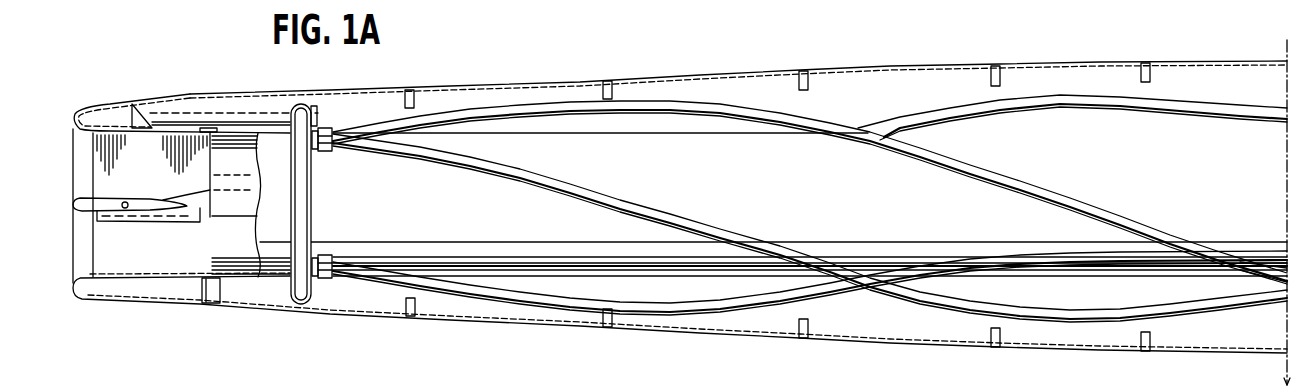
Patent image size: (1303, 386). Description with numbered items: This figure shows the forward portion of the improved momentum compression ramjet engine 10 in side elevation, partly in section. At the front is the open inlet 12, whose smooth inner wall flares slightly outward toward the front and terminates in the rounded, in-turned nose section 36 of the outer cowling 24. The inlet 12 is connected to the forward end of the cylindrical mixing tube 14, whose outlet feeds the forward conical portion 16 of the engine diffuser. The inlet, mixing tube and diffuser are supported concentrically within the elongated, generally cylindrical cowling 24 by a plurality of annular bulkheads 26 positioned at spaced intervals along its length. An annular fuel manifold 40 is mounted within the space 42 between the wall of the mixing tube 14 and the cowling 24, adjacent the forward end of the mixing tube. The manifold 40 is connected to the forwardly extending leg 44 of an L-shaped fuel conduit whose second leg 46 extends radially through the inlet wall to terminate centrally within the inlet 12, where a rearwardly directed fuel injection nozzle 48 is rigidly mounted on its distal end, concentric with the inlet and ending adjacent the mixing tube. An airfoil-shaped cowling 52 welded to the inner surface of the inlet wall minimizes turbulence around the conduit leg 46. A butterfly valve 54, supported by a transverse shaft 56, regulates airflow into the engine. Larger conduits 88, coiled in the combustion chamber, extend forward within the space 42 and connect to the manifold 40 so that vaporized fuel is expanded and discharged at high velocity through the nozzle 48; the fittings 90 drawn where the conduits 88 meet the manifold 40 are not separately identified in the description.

The momentum compression ramjet engine 10 is at (890, 348).
The open inlet 12 is at (137, 263).
The cylindrical mixing tube 14 is at (487, 240).
The forward conical portion 16 is at (1247, 277).
The cowling 24 is at (710, 80).
The annular bulkheads 26 is at (418, 100).
The nose section 36 is at (72, 117).
The annular fuel manifold 40 is at (312, 204).
The space 42 is at (723, 322).
The forwardly extending leg 44 is at (255, 118).
The second leg 46 is at (150, 126).
The fuel injection nozzle 48 is at (198, 208).
The airfoil-shaped cowling 52 is at (128, 143).
The butterfly valve 54 is at (105, 204).
The transverse shaft 56 is at (125, 210).
The conduits 88 is at (678, 113).
The tube end fittings 90 is at (325, 153).